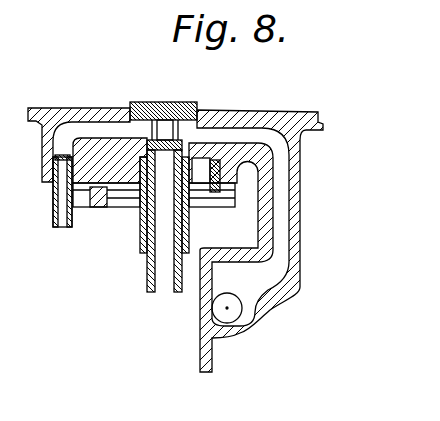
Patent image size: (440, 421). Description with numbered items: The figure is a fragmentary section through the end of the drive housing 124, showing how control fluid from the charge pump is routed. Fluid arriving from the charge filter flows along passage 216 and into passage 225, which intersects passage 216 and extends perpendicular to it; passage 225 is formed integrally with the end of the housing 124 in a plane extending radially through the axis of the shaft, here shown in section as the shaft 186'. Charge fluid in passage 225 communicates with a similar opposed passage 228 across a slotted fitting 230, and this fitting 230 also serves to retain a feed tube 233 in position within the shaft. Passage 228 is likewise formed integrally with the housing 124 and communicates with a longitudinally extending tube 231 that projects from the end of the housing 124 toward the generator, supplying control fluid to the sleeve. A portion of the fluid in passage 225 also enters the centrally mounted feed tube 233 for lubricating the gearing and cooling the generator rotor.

The housing 124 is at (55, 110).
The passage 228 is at (100, 113).
The slotted fitting 230 is at (177, 103).
The feed tube 233 is at (150, 291).
The bearing bushing 186' is at (154, 208).
The tube 231 is at (52, 212).
The passage 225 is at (300, 206).
The passage 216 is at (245, 320).